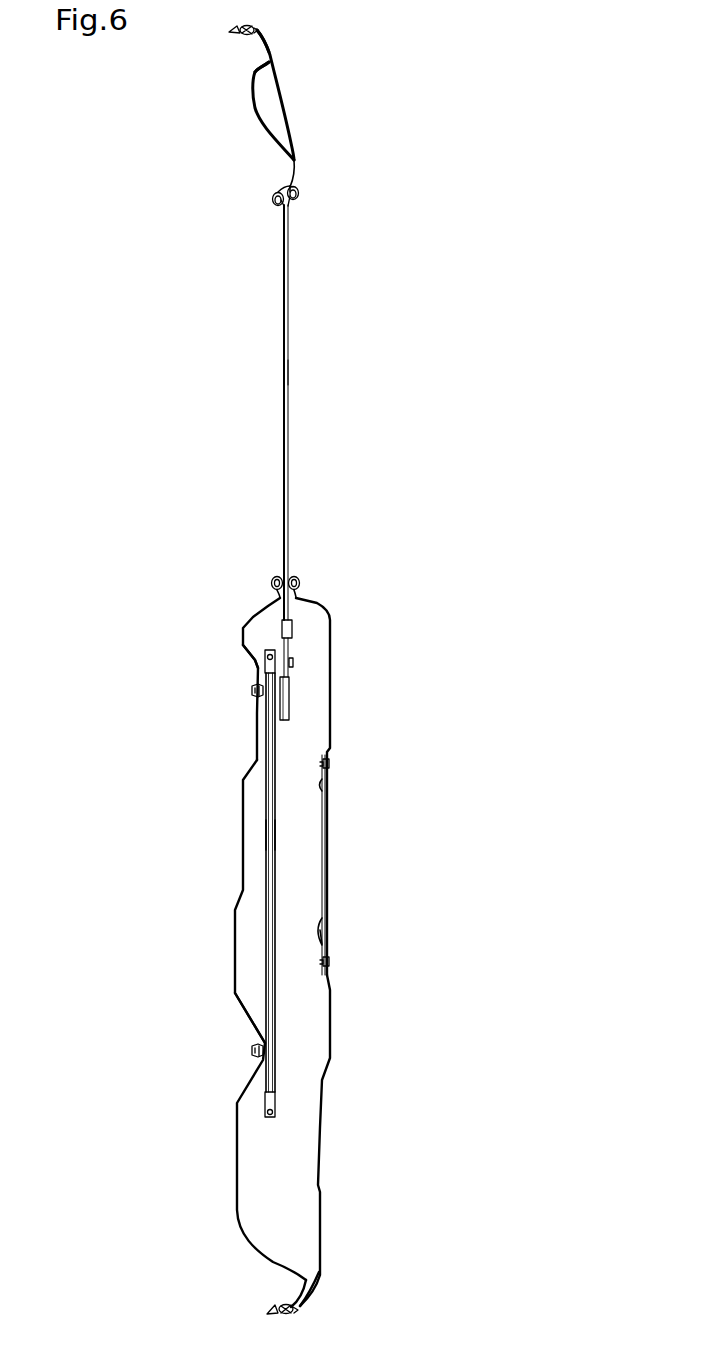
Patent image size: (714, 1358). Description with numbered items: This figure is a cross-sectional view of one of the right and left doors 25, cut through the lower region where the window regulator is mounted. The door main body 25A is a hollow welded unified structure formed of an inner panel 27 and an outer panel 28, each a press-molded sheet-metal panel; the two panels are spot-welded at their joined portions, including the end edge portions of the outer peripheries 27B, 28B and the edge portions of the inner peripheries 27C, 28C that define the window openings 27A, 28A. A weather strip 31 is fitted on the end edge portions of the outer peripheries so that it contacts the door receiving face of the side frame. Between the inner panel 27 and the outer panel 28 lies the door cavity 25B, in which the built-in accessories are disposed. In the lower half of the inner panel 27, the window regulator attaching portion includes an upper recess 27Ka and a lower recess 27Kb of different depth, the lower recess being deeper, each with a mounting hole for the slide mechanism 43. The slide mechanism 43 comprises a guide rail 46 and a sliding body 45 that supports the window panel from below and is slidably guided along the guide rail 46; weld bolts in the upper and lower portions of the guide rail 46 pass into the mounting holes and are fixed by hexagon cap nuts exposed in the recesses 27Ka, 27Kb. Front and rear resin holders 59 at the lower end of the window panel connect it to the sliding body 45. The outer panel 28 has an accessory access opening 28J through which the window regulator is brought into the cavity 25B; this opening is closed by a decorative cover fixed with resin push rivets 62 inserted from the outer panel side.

The door 25 is at (437, 142).
The door main body 25A is at (333, 650).
The door cavity 25B is at (317, 690).
The inner panel 27 is at (253, 108).
The window opening of inner panel 27A is at (270, 373).
The outer periphery of inner panel 27B is at (266, 58).
The inner periphery of inner panel 27C is at (289, 185).
The upper recess 27Ka is at (260, 674).
The lower recess 27Kb is at (248, 1030).
The outer panel 28 is at (296, 110).
The window opening of outer panel 28A is at (303, 372).
The outer periphery of outer panel 28B is at (268, 42).
The inner periphery of outer panel 28C is at (298, 170).
The accessory access opening 28J is at (322, 933).
The weather strip 31 is at (230, 31).
The slide mechanism 43 is at (298, 705).
The sliding body 45 is at (293, 722).
The guide rail 46 is at (265, 767).
The holder 59 is at (283, 637).
The push rivet 62 is at (331, 764).